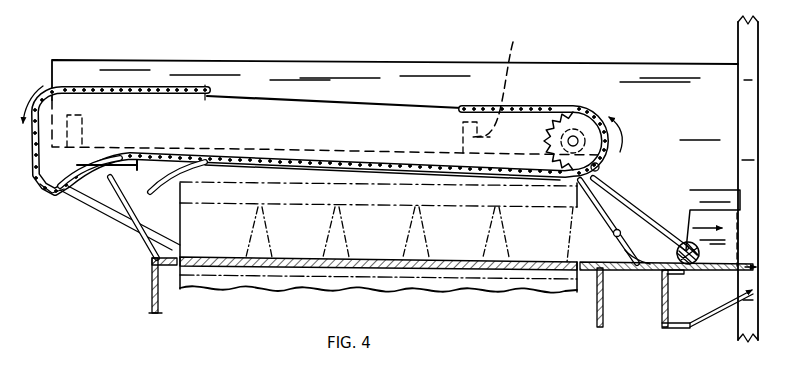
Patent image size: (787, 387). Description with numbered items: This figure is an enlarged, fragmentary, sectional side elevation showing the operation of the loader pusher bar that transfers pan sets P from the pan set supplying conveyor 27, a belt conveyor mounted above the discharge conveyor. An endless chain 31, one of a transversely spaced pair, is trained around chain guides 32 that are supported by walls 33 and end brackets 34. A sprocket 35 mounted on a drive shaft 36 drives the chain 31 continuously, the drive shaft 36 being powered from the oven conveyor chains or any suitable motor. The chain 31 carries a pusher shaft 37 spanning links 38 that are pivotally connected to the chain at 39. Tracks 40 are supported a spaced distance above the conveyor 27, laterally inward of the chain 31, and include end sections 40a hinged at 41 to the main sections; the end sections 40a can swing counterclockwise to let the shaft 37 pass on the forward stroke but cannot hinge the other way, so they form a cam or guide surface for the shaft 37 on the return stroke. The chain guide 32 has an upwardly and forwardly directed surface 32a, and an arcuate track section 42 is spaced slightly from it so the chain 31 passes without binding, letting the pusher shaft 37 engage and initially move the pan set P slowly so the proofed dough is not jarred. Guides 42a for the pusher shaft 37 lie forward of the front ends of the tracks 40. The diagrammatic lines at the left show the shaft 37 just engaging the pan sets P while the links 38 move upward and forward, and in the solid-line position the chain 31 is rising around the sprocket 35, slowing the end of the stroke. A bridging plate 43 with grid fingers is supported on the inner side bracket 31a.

The pan set supplying conveyor 27 is at (284, 290).
The endless chain 31 is at (137, 91).
The side plate 31a is at (607, 325).
The chain guide 32 is at (245, 108).
The upwardly and forwardly directed surface 32a is at (53, 191).
The wall 33 is at (332, 72).
The end bracket 34 is at (514, 42).
The sprocket 35 is at (582, 127).
The drive shaft 36 is at (609, 118).
The pusher shaft 37 is at (148, 268).
The link 38 is at (633, 201).
The pivotal connection 39 is at (599, 167).
The track 40 is at (155, 194).
The track end section 40a is at (627, 252).
The hinge 41 is at (613, 233).
The arcuate track section 42 is at (95, 198).
The pusher shaft guide 42a is at (137, 252).
The bridging plate 43 is at (623, 268).
The pan set P is at (718, 258).